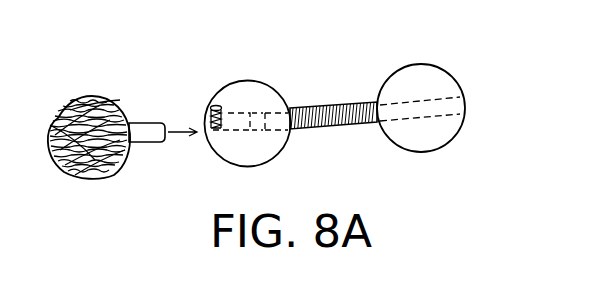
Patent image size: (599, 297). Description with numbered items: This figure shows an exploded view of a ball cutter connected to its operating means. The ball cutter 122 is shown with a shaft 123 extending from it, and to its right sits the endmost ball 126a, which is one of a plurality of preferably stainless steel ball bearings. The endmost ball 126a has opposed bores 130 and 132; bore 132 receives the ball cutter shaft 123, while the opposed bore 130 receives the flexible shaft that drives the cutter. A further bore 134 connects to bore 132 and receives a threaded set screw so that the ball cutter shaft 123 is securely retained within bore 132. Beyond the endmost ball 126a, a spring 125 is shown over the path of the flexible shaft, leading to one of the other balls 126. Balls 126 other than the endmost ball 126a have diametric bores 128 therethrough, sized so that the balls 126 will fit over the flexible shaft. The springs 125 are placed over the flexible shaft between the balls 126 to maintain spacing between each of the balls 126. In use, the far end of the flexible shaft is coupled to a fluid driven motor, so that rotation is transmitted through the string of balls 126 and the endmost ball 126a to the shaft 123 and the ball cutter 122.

The ball cutter 122 is at (58, 118).
The ball cutter shaft 123 is at (138, 123).
The spring 125 is at (343, 129).
The ball bearing 126 is at (410, 82).
The endmost ball 126a is at (258, 92).
The diametric bore 128 is at (437, 104).
The bore 130 is at (273, 131).
The bore 132 is at (233, 131).
The bore 134 is at (213, 104).